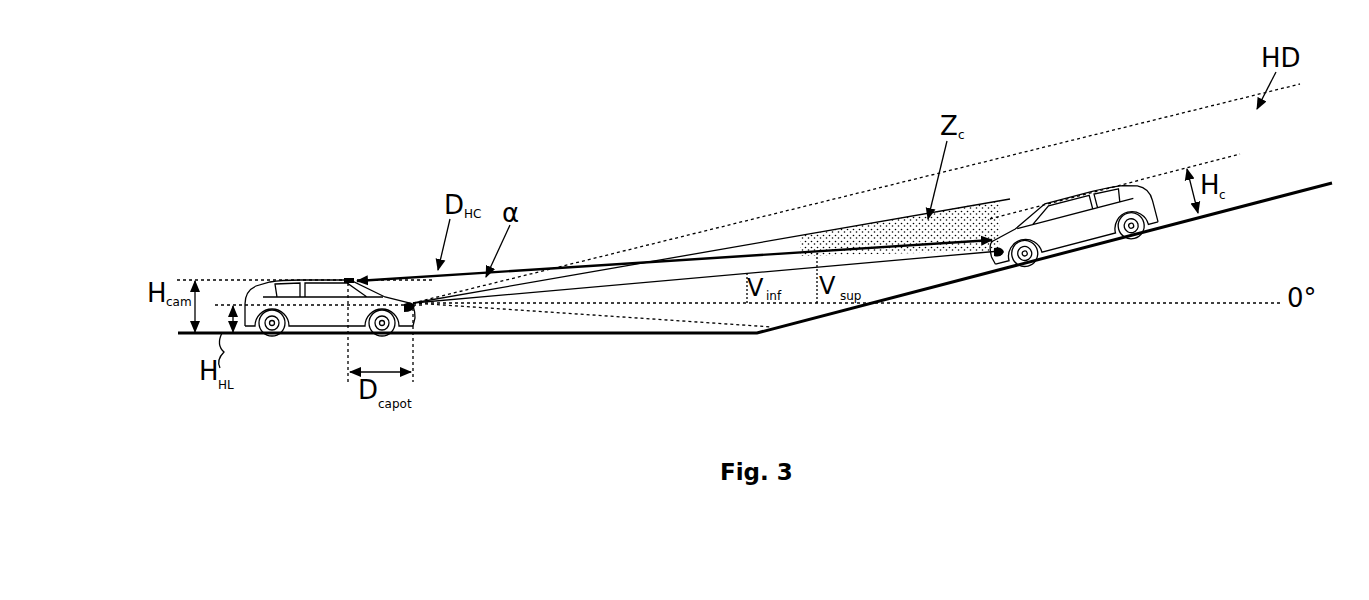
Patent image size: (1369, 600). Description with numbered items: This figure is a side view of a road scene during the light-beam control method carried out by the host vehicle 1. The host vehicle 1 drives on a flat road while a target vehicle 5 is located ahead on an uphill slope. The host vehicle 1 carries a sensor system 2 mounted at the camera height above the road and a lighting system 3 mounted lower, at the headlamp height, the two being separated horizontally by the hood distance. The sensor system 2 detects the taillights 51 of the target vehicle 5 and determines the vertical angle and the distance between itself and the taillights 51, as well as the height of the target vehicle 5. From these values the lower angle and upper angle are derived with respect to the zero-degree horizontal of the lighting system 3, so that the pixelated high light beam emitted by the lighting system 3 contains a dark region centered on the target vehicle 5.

The host vehicle 1 is at (320, 358).
The sensor system 2 is at (350, 276).
The lighting system 3 is at (421, 312).
The target vehicle 5 is at (1062, 234).
The taillights 51 is at (997, 256).